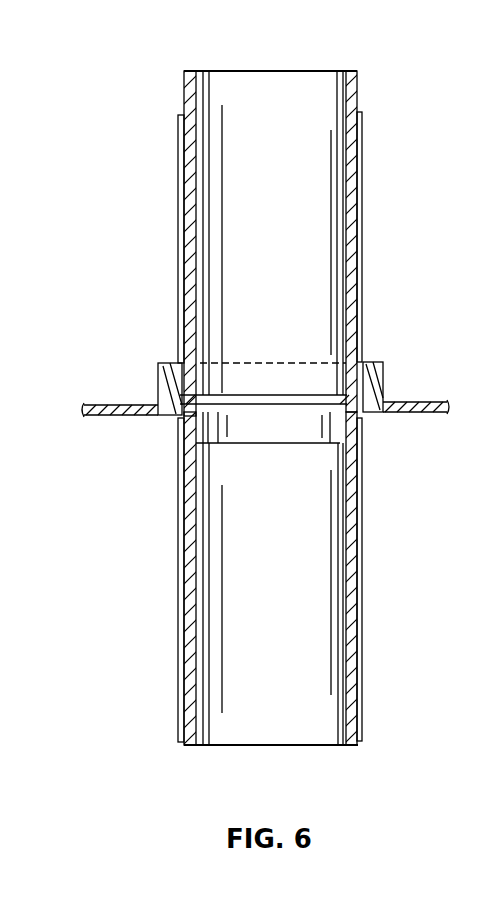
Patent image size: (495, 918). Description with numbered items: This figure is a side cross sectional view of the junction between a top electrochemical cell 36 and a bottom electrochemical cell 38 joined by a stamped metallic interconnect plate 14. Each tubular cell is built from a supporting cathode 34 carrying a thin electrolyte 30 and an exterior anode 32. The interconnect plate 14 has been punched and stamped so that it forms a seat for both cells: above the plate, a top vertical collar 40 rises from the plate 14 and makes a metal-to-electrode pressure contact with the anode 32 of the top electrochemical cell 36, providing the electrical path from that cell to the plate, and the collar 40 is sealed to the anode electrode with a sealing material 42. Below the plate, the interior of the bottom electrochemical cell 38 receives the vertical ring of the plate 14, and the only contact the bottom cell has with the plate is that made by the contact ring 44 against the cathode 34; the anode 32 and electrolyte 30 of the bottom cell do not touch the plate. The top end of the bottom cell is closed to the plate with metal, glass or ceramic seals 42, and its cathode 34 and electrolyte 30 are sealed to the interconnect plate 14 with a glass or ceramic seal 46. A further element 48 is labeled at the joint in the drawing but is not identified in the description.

The interconnect plate 14 is at (410, 400).
The electrolyte 30 is at (237, 223).
The anode 32 is at (180, 152).
The cathode 34 is at (189, 70).
The top electrochemical cell 36 is at (283, 92).
The bottom electrochemical cell 38 is at (240, 598).
The vertical collar 40 is at (264, 367).
The sealing material 42 is at (178, 362).
The contact ring 44 is at (330, 424).
The glass or ceramic seal 46 is at (183, 418).
The seal 48 is at (193, 402).